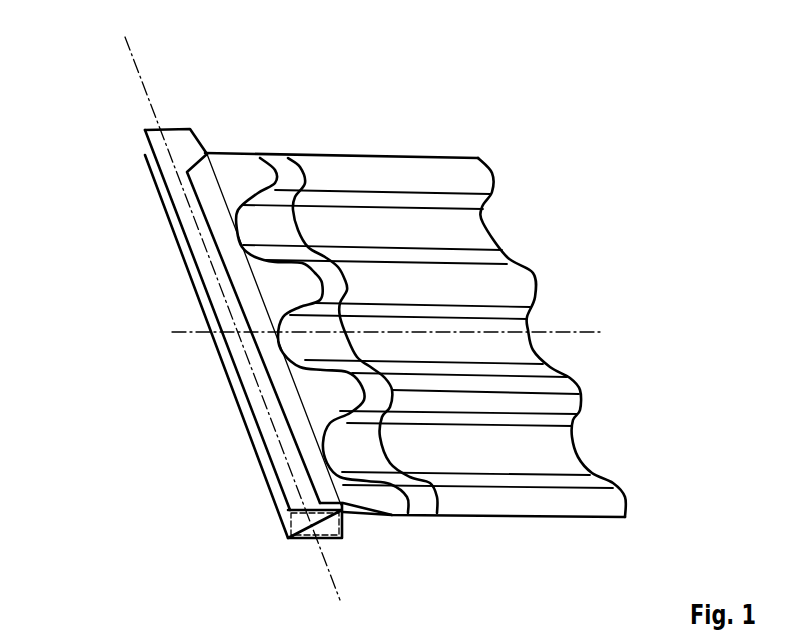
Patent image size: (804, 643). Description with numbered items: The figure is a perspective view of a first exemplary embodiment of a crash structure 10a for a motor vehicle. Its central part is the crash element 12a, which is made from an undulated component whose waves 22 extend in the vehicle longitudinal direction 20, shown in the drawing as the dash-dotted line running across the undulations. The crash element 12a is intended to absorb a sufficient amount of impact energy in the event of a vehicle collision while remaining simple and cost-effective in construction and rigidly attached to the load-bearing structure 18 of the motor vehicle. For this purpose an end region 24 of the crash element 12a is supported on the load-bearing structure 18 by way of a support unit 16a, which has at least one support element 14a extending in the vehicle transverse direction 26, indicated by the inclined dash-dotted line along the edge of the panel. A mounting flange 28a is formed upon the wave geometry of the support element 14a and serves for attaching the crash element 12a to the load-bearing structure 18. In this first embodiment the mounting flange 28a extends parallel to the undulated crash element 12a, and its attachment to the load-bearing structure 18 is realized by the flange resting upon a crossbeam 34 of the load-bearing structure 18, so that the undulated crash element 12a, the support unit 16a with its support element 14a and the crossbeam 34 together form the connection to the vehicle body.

The crash structure 10a is at (583, 146).
The crash element 12a is at (572, 387).
The support element 14a is at (278, 172).
The support unit 16a is at (232, 146).
The load-bearing structure 18 is at (183, 205).
The crossbeam 34 is at (253, 328).
The vehicle longitudinal direction 20 is at (580, 328).
The waves 22 is at (465, 173).
The end region 24 is at (370, 536).
The vehicle transverse direction 26 is at (140, 82).
The mounting flange 28a is at (182, 128).